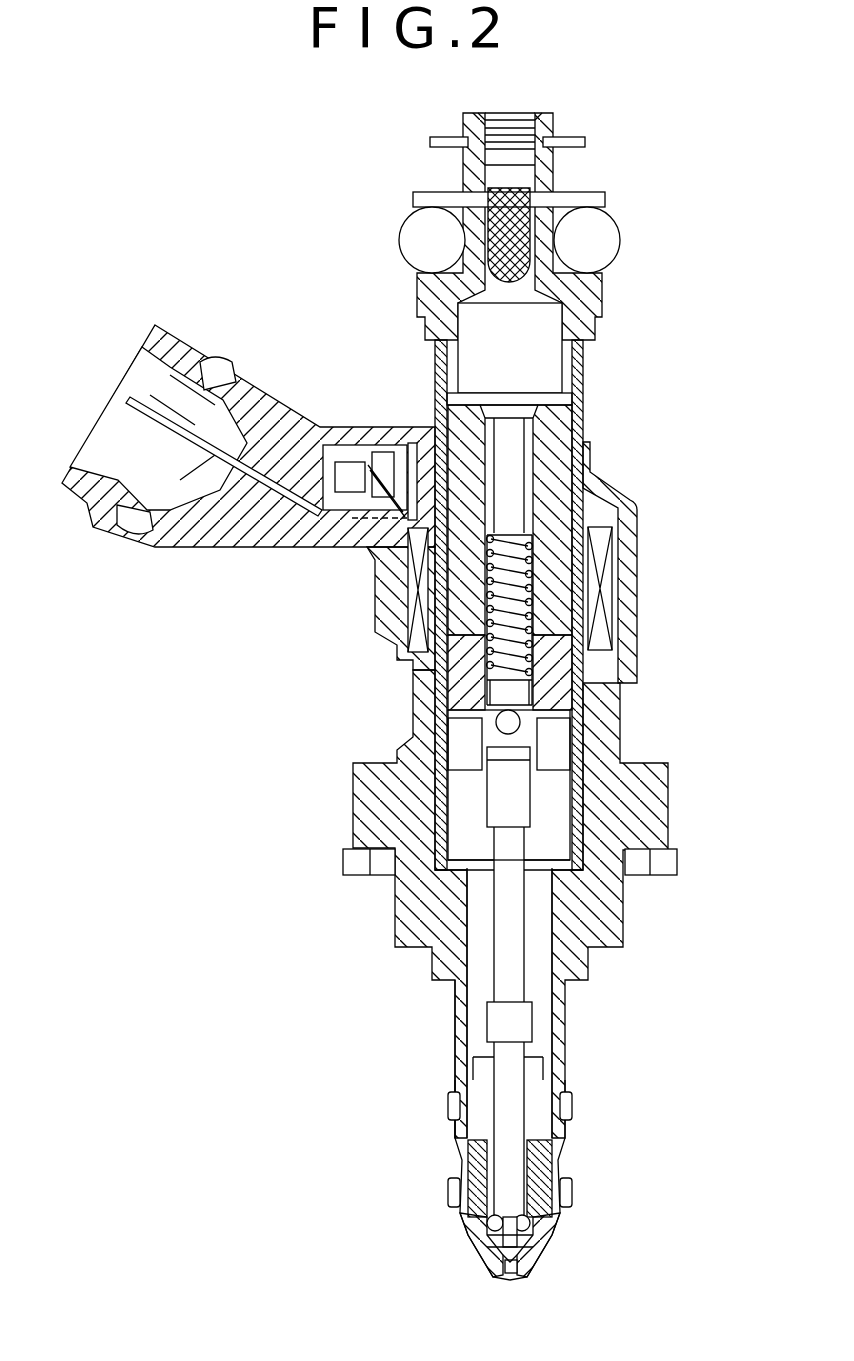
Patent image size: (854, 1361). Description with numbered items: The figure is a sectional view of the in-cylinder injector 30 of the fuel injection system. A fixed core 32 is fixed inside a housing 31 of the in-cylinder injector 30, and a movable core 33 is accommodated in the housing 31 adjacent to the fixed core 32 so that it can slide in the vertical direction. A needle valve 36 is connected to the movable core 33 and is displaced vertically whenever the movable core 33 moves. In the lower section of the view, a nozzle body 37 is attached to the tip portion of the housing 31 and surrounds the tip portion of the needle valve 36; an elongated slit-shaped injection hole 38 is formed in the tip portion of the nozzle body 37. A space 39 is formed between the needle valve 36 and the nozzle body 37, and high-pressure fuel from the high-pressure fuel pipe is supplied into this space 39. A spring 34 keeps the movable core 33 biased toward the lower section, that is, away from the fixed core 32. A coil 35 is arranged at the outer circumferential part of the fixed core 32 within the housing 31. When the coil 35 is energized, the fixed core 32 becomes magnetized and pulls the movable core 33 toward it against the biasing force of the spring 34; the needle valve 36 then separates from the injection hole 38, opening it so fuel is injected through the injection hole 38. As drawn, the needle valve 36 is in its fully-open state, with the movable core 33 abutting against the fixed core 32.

The in-cylinder injector 30 is at (399, 710).
The housing 31 is at (668, 797).
The fixed core 32 is at (548, 443).
The movable core 33 is at (560, 693).
The spring 34 is at (490, 705).
The coil 35 is at (412, 597).
The needle valve 36 is at (510, 1088).
The nozzle body 37 is at (535, 1270).
The injection hole 38 is at (508, 1280).
The space 39 is at (492, 1238).